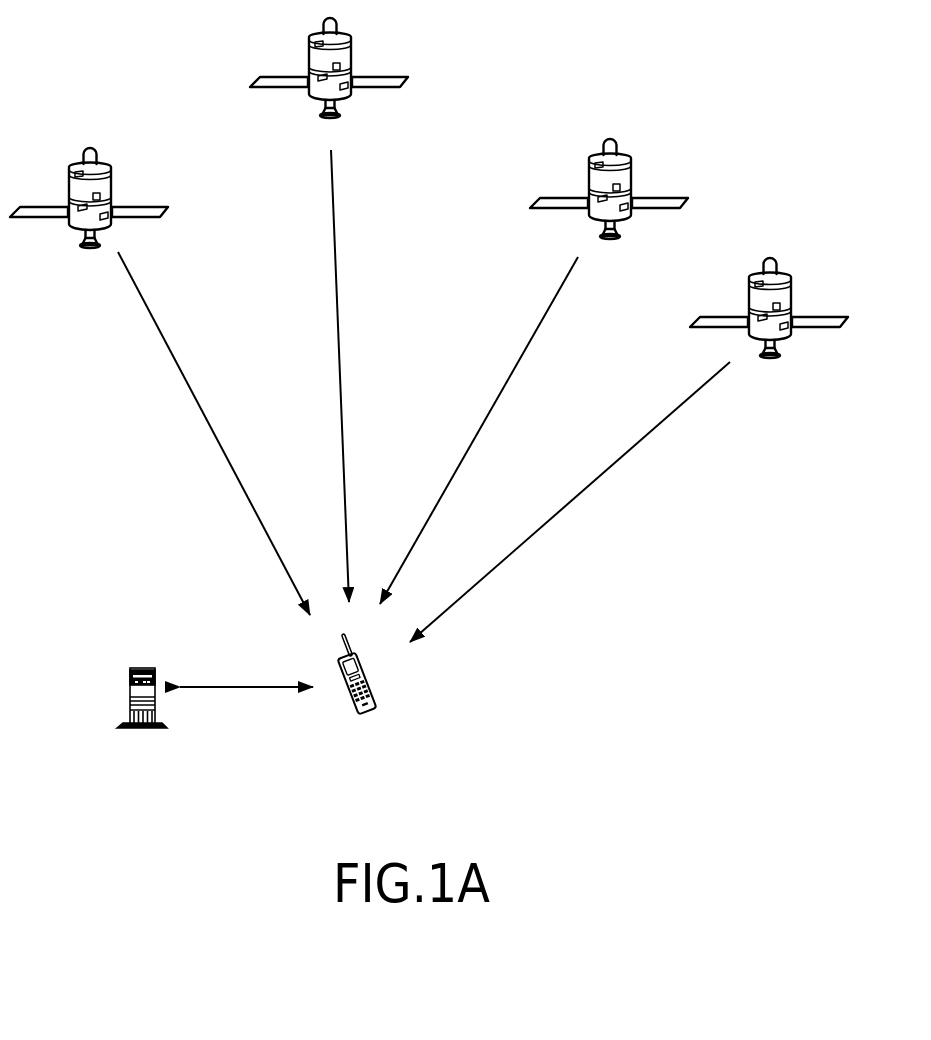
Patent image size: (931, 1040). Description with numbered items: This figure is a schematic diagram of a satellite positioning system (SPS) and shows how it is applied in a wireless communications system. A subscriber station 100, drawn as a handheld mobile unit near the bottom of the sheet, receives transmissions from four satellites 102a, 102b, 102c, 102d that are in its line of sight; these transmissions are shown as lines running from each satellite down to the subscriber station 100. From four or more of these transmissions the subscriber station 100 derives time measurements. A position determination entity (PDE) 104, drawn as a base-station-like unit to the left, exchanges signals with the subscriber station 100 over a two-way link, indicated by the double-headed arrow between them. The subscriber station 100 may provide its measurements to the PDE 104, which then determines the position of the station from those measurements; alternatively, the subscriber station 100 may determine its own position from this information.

The subscriber station 100 is at (353, 707).
The satellite 102a is at (113, 180).
The satellite 102b is at (353, 50).
The satellite 102c is at (633, 173).
The satellite 102d is at (793, 292).
The position determination entity (PDE) 104 is at (148, 668).